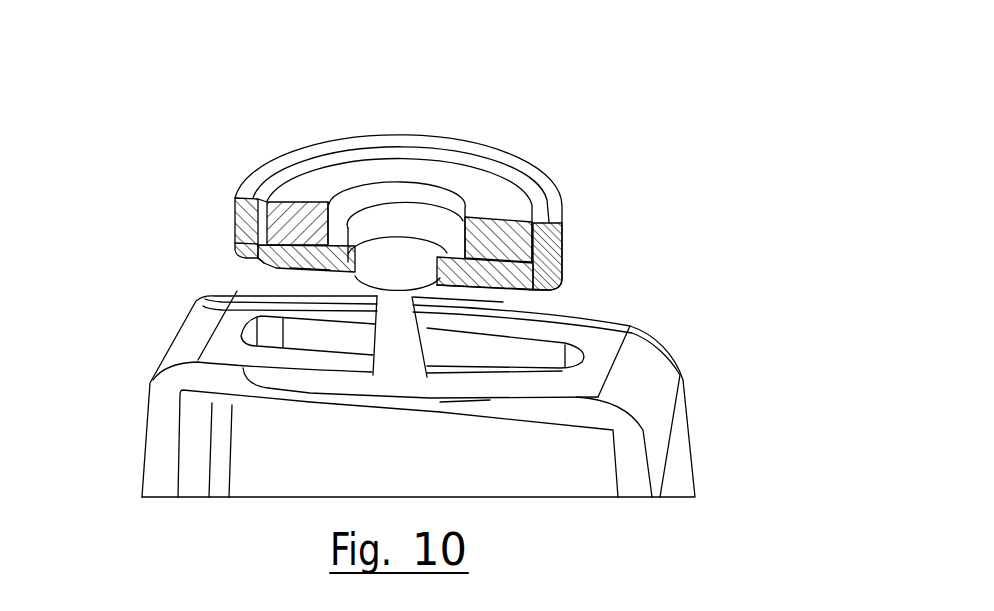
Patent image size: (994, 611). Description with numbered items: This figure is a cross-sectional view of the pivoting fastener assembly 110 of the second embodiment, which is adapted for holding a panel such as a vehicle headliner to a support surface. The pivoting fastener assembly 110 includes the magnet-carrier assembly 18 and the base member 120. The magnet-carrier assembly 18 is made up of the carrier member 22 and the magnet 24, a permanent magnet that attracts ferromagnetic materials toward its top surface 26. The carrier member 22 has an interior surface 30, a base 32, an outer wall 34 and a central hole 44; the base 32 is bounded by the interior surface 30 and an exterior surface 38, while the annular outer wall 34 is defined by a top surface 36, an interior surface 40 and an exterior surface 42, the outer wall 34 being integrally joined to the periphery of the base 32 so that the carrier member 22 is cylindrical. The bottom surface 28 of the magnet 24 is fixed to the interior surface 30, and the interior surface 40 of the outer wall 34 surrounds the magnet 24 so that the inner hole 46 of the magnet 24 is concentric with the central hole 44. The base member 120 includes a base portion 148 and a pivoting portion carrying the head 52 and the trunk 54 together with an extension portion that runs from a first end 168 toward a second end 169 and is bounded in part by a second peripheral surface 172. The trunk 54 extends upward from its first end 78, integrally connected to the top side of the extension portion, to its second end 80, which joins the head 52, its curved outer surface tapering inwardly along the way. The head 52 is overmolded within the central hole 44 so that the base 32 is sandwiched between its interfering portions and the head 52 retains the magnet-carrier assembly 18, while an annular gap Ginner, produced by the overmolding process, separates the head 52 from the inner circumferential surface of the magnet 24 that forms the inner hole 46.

The pivoting fastener assembly 110 is at (765, 118).
The magnet-carrier assembly 18 is at (655, 162).
The base member 120 is at (705, 261).
The carrier member 22 is at (285, 167).
The magnet 24 is at (455, 165).
The top surface 26 is at (415, 160).
The top surface 36 is at (300, 150).
The inner hole 46 is at (351, 195).
The interior surface 40 is at (277, 246).
The interior surface 30 is at (263, 197).
The outer wall 34 is at (235, 210).
The exterior surface 42 is at (235, 243).
The bottom surface 28 is at (278, 246).
The base 32 is at (268, 265).
The exterior surface 38 is at (301, 269).
The central hole 44 is at (408, 252).
The head 52 is at (542, 277).
The annular gap Ginner is at (458, 236).
The trunk 54 is at (503, 302).
The second end 80 is at (205, 305).
The first end 168 is at (233, 357).
The first end 78 is at (310, 371).
The base portion 148 is at (630, 326).
The second end 169 is at (562, 387).
The second peripheral surface 172 is at (490, 400).